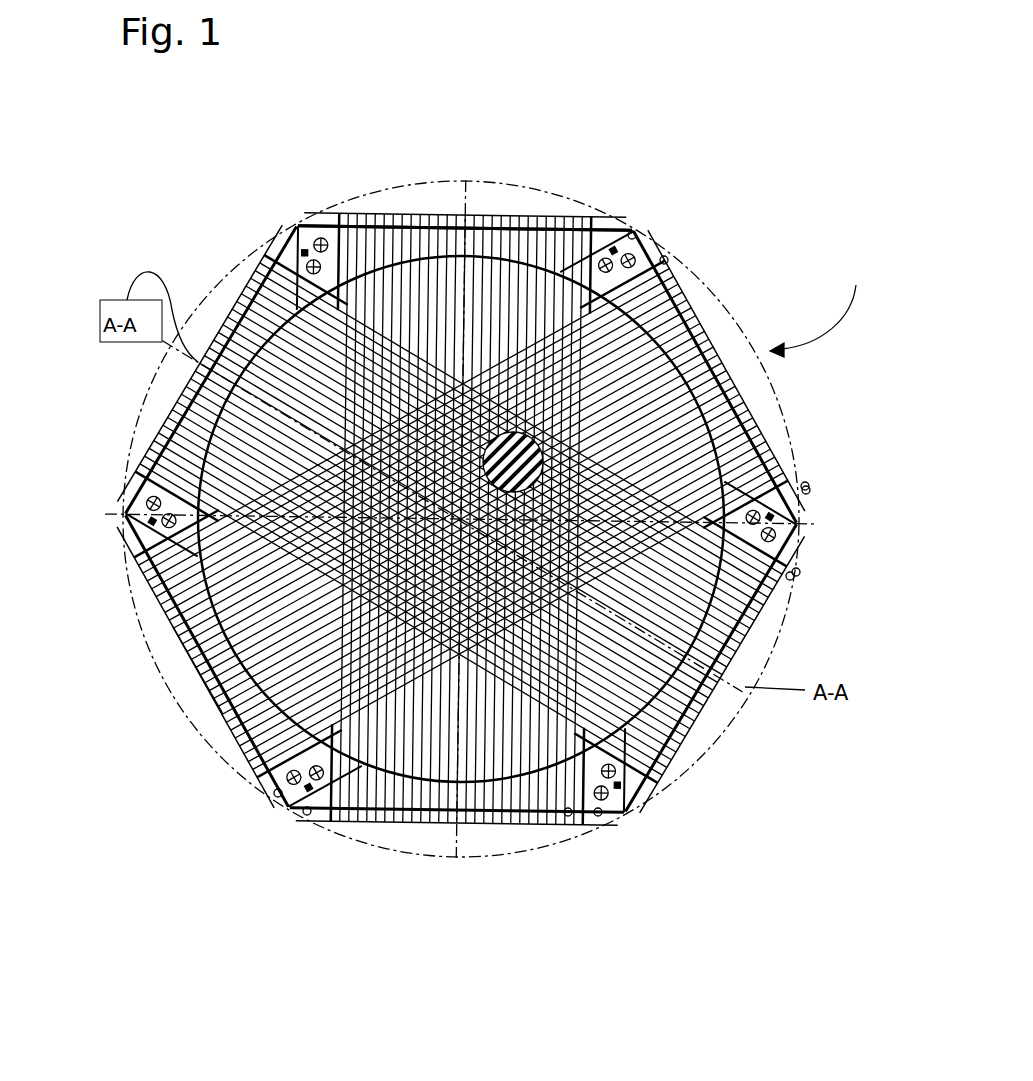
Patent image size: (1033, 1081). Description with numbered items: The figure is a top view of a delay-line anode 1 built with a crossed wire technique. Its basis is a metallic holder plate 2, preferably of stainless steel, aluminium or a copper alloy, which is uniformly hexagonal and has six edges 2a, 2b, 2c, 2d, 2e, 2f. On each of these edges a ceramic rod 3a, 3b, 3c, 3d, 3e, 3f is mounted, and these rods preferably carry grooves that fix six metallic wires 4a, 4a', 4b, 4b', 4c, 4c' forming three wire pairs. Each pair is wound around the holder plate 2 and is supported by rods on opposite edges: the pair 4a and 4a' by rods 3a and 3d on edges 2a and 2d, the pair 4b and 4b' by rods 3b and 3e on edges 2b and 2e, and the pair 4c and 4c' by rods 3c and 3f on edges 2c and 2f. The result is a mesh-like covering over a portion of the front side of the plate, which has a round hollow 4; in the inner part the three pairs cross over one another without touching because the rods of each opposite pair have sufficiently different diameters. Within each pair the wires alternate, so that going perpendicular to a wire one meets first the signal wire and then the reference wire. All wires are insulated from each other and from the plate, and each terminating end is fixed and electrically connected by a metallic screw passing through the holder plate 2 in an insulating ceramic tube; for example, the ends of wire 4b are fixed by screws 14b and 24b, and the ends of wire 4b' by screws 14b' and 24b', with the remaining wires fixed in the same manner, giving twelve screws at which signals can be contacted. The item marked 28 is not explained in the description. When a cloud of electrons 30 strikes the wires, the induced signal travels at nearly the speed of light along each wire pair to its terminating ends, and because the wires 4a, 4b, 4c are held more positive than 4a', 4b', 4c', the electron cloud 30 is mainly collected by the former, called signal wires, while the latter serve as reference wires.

The delay-line anode 1 is at (819, 306).
The holder plate 2 is at (294, 231).
The edge 2a is at (618, 227).
The edge 2b is at (800, 488).
The edge 2c is at (634, 810).
The edge 2d is at (304, 812).
The edge 2e is at (119, 528).
The edge 2f is at (292, 229).
The ceramic rod 3a is at (328, 226).
The ceramic rod 3b is at (697, 261).
The ceramic rod 3c is at (801, 551).
The ceramic rod 3d is at (596, 820).
The ceramic rod 3e is at (270, 772).
The ceramic rod 3f is at (125, 497).
The round hollow 4 is at (373, 770).
The signal wire 4a is at (566, 865).
The reference wire 4a' is at (521, 865).
The signal wire 4b is at (853, 466).
The reference wire 4b' is at (855, 451).
The signal wire 4c is at (844, 608).
The reference wire 4c' is at (850, 594).
The screw 14b is at (244, 842).
The screw 14b' is at (217, 822).
The screw 24b is at (726, 229).
The screw 24b' is at (701, 204).
The outer plate 28 is at (198, 670).
The cloud of electrons 30 is at (514, 432).